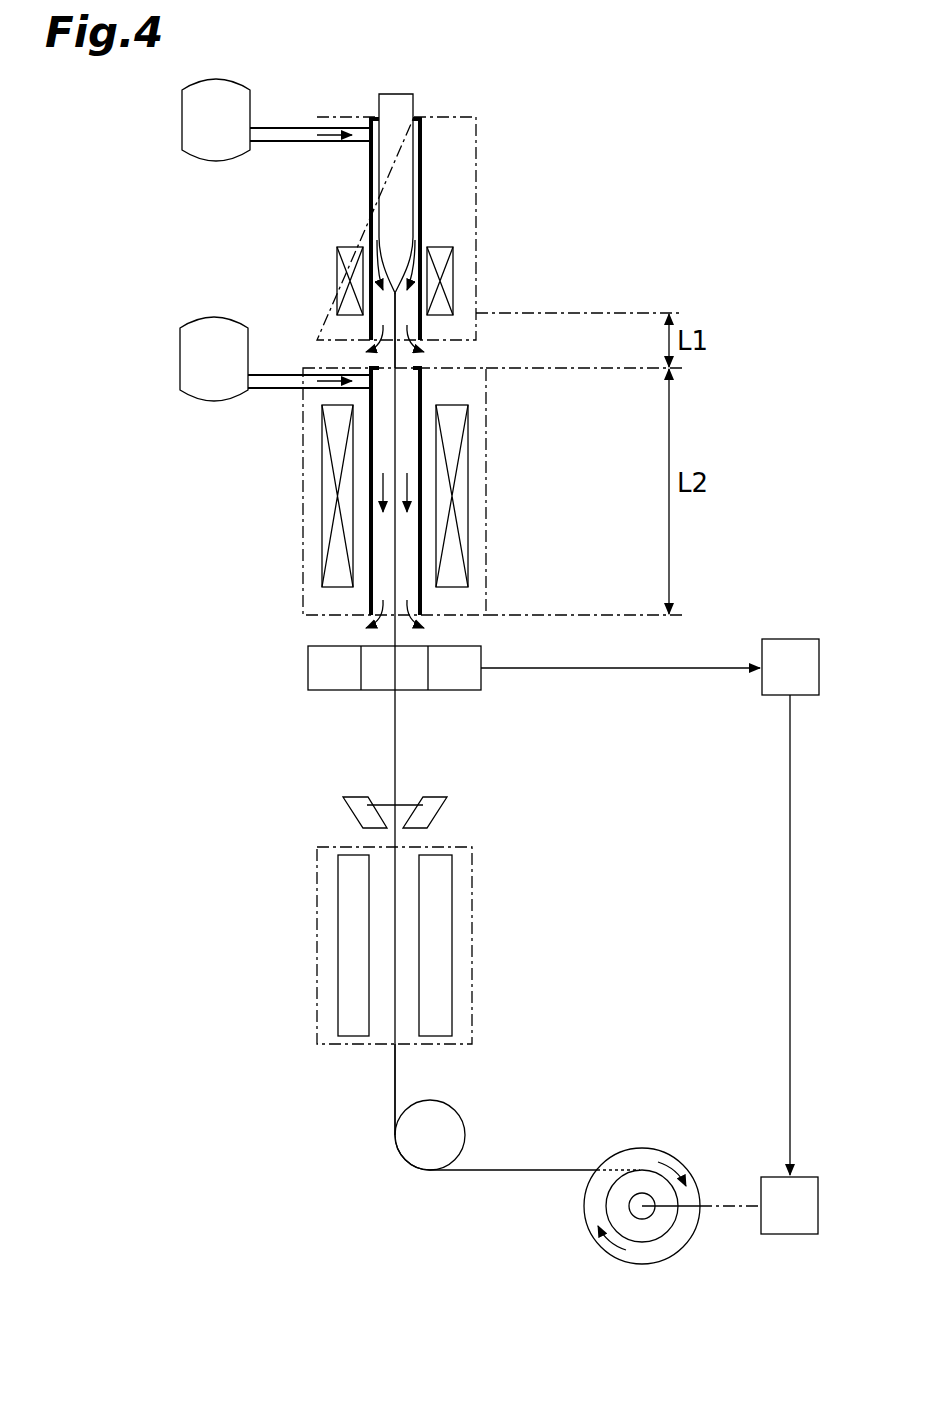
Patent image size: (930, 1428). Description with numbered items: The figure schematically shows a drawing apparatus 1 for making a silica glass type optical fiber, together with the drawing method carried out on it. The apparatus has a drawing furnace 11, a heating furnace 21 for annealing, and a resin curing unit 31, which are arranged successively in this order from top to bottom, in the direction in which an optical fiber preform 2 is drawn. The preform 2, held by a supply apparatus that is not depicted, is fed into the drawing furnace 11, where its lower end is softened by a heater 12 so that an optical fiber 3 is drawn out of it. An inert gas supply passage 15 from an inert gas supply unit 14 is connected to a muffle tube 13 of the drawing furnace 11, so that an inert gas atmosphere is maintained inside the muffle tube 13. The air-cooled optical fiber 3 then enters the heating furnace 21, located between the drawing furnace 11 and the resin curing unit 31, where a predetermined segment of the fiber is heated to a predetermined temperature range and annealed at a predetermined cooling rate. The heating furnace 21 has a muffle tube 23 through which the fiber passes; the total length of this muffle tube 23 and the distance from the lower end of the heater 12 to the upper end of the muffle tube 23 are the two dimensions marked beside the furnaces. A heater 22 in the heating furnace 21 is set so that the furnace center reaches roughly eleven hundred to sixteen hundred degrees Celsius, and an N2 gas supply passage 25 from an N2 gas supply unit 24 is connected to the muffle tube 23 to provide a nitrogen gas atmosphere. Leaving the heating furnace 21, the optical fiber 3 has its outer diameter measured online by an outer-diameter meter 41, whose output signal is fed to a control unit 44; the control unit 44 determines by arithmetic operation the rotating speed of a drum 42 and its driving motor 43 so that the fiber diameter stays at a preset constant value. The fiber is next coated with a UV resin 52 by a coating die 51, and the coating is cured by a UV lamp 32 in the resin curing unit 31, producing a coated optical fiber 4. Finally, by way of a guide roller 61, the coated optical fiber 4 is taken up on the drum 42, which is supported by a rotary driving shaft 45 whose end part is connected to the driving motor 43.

The drawing apparatus 1 is at (705, 187).
The optical fiber preform 2 is at (413, 104).
The optical fiber 3 is at (410, 362).
The coated optical fiber 4 is at (395, 1078).
The drawing furnace 11 is at (483, 218).
The heater 12 is at (453, 297).
The muffle tube 13 is at (422, 178).
The inert gas supply unit 14 is at (250, 100).
The inert gas supply passage 15 is at (295, 143).
The heating furnace 21 is at (488, 470).
The heater 22 is at (468, 560).
The muffle tube 23 is at (422, 381).
The N2 gas supply unit 24 is at (223, 405).
The N2 gas supply passage 25 is at (288, 375).
The resin curing unit 31 is at (472, 942).
The UV lamp 32 is at (452, 1018).
The outer-diameter meter 41 is at (458, 690).
The drum 42 is at (650, 1148).
The driving motor 43 is at (785, 1234).
The control unit 44 is at (775, 695).
The rotary driving shaft 45 is at (630, 1203).
The coating die 51 is at (432, 807).
The UV resin 52 is at (383, 812).
The guide roller 61 is at (400, 1133).